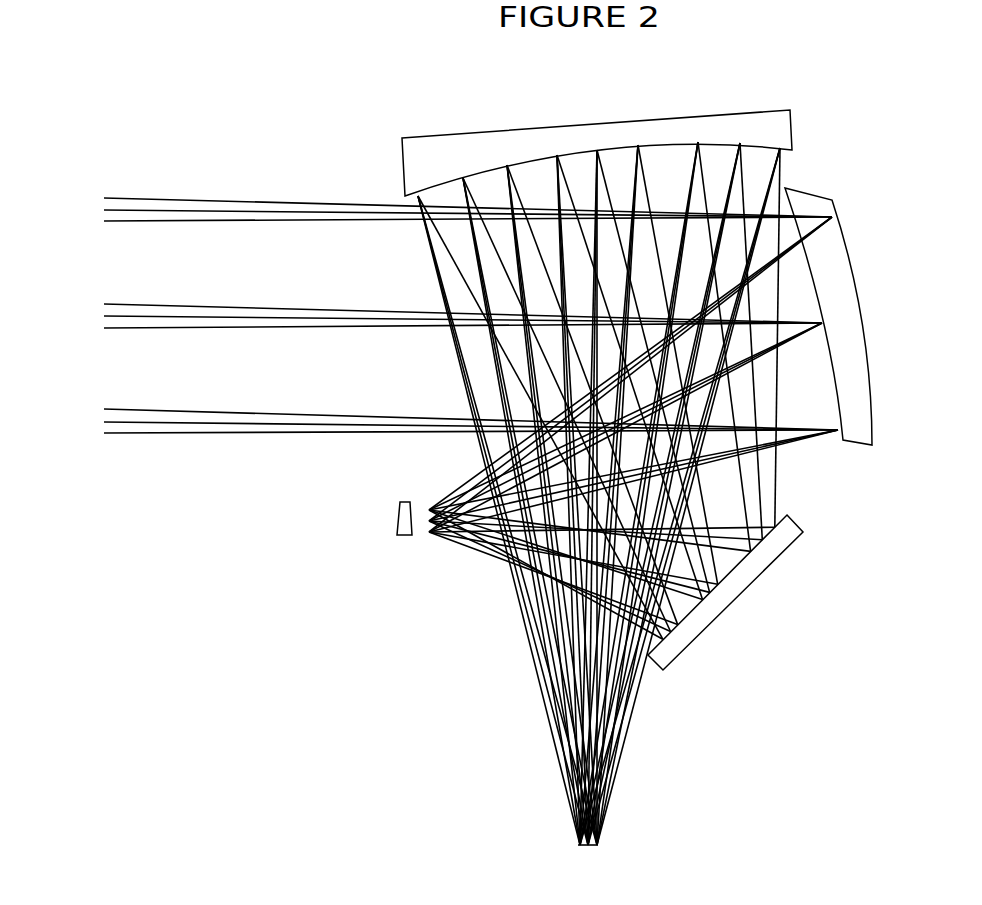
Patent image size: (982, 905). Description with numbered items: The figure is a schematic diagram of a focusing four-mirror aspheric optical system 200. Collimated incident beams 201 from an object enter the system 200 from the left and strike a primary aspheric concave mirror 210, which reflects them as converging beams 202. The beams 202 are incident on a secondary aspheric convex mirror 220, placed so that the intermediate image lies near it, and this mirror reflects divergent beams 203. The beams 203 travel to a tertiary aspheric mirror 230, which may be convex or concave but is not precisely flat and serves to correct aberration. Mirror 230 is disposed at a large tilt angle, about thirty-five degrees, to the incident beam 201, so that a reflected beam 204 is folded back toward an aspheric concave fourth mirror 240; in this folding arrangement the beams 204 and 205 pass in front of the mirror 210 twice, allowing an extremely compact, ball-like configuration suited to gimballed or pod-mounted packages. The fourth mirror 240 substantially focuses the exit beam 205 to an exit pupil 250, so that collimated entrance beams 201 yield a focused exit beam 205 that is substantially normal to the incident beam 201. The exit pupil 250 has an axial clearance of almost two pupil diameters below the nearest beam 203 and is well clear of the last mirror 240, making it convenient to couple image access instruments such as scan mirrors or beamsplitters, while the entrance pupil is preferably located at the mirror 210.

The focusing four-mirror optical system 200 is at (140, 121).
The incident beams 201 is at (208, 200).
The converging beams 202 is at (457, 465).
The divergent beams 203 is at (488, 565).
The beam reflected from tertiary mirror 204 is at (786, 173).
The exit beam 205 is at (432, 288).
The primary aspheric concave mirror 210 is at (867, 358).
The secondary aspheric convex mirror 220 is at (397, 520).
The tertiary aspheric mirror 230 is at (737, 595).
The aspheric concave fourth mirror 240 is at (597, 118).
The exit pupil 250 is at (588, 870).